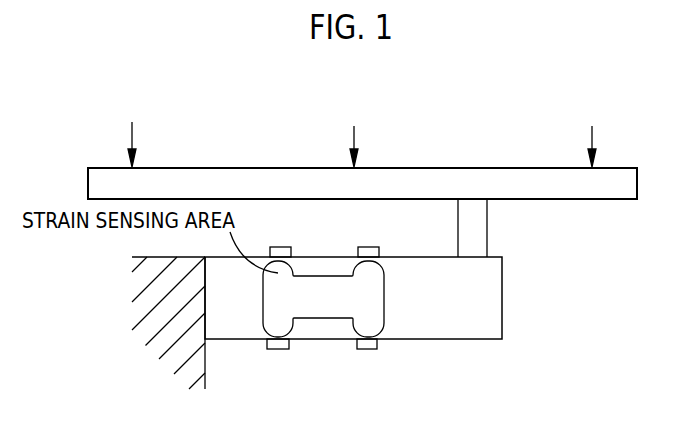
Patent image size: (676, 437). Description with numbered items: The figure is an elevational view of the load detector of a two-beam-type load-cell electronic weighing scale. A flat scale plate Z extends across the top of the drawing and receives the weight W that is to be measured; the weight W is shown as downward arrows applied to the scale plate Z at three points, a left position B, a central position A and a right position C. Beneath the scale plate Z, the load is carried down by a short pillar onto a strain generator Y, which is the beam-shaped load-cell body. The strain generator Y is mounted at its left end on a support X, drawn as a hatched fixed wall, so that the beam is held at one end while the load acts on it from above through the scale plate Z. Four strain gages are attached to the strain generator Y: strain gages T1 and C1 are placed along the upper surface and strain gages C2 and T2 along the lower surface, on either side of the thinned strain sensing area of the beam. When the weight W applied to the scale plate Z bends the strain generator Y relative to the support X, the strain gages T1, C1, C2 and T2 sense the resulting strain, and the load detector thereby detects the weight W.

The scale plate Z is at (544, 190).
The strain generator Y is at (493, 288).
The support X is at (205, 347).
The weight W is at (362, 132).
The central load position A is at (354, 87).
The left off-center load position B is at (132, 81).
The right off-center load position C is at (592, 87).
The strain gage T1 is at (279, 242).
The strain gage C1 is at (368, 242).
The strain gage C2 is at (278, 359).
The strain gage T2 is at (367, 359).